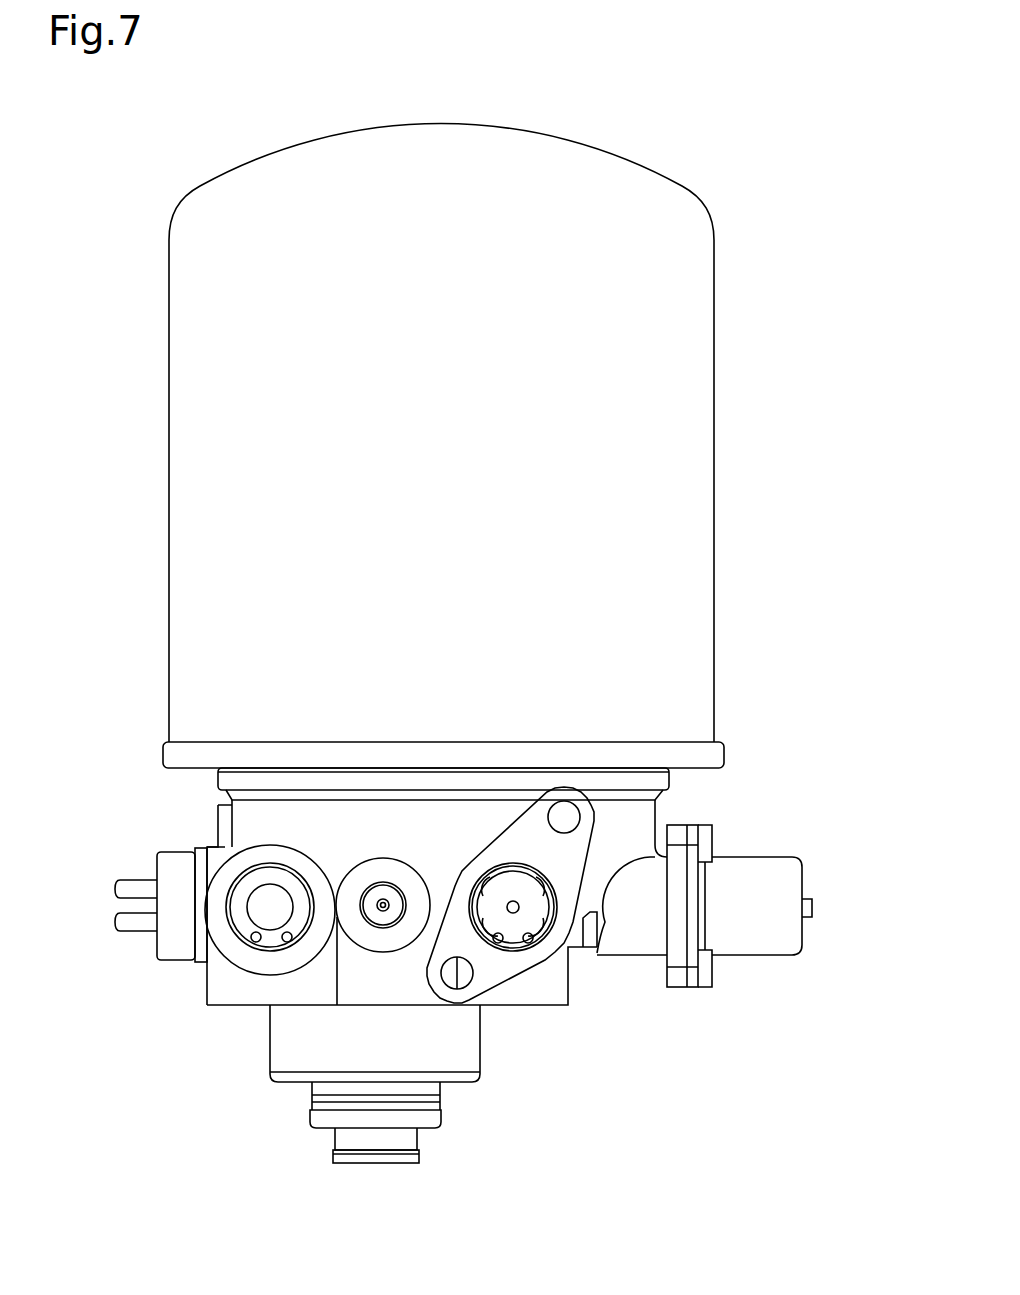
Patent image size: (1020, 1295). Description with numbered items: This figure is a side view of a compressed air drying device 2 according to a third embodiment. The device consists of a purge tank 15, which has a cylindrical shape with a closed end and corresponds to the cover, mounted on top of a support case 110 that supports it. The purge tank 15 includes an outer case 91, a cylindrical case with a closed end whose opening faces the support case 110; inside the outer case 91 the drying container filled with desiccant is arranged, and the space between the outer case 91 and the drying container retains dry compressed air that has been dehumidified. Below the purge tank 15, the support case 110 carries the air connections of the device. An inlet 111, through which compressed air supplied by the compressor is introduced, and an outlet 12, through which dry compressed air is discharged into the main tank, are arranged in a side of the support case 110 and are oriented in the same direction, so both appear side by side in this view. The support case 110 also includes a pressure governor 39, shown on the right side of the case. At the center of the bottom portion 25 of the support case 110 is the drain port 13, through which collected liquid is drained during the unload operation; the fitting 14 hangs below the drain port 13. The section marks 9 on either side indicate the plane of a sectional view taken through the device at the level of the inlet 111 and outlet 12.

The compressed air drying device 2 is at (746, 84).
The purge tank 15 is at (716, 322).
The outer case 91 is at (716, 507).
The pressure governor 39 is at (799, 790).
The section line 9 is at (82, 905).
The inlet 111 is at (248, 942).
The outlet 12 is at (523, 947).
The bottom portion 25 is at (482, 1050).
The drain port 13 is at (293, 1083).
The outlet 14 is at (417, 1135).
The support case 110 is at (667, 957).